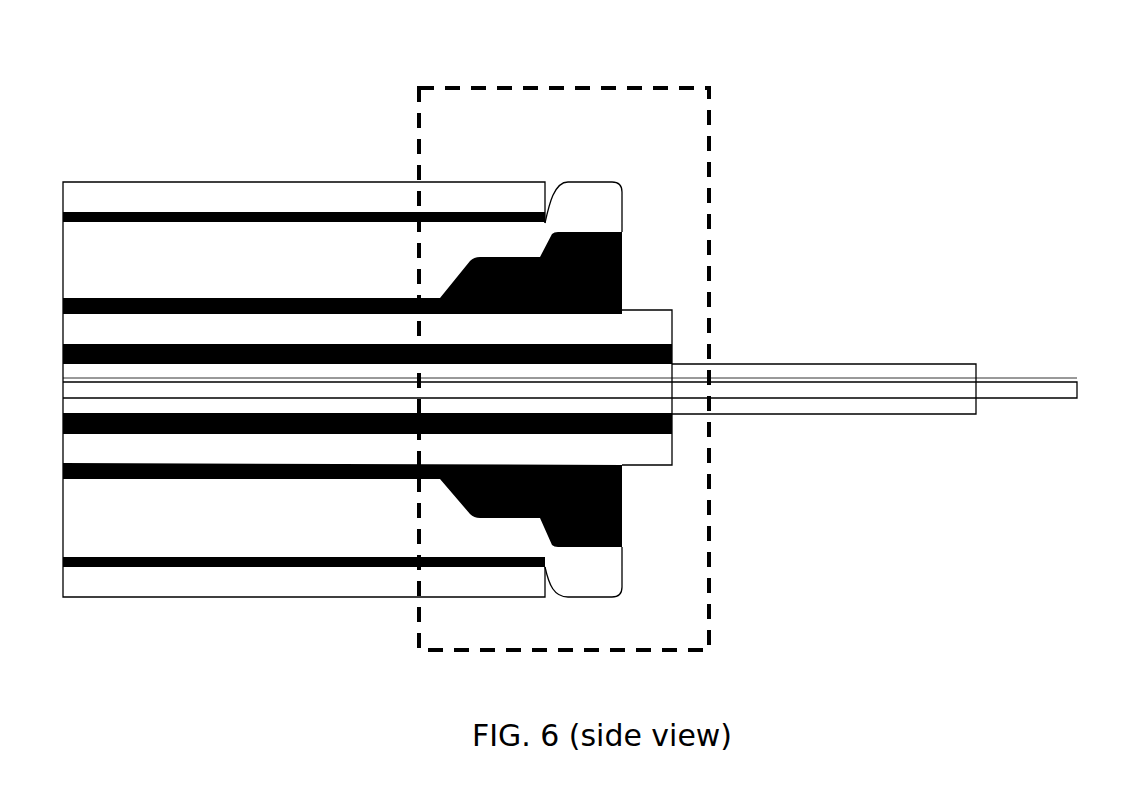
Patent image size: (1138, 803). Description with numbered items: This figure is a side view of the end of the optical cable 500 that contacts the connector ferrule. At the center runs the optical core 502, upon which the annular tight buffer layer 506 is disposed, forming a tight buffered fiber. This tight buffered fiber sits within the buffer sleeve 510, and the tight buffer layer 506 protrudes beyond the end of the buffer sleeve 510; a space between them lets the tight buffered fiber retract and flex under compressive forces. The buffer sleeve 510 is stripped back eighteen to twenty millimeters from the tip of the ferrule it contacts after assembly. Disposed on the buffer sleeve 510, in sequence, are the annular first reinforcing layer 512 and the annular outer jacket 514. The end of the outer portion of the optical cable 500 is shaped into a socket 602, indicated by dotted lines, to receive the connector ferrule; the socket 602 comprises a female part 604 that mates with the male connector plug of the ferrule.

The optical cable 500 is at (762, 105).
The optical core 502 is at (1052, 388).
The tight buffer layer 506 is at (917, 364).
The buffer sleeve 510 is at (270, 457).
The first reinforcing layer 512 is at (200, 232).
The outer jacket 514 is at (323, 187).
The socket 602 is at (548, 88).
The female part 604 is at (604, 250).